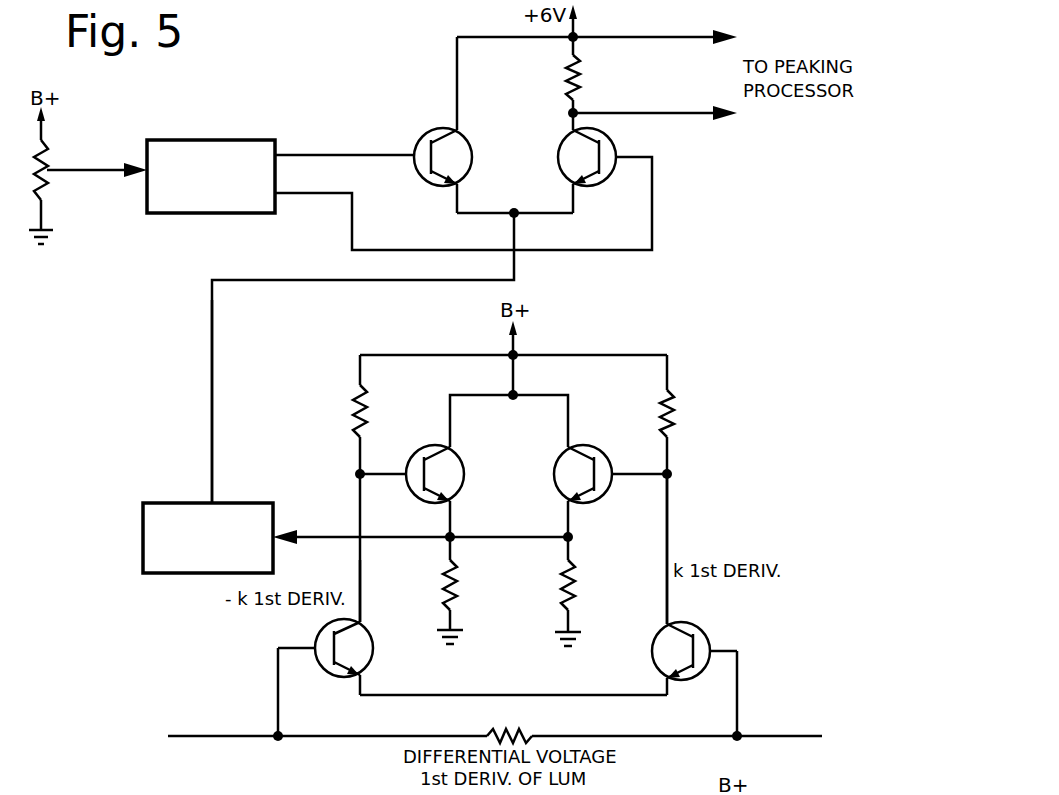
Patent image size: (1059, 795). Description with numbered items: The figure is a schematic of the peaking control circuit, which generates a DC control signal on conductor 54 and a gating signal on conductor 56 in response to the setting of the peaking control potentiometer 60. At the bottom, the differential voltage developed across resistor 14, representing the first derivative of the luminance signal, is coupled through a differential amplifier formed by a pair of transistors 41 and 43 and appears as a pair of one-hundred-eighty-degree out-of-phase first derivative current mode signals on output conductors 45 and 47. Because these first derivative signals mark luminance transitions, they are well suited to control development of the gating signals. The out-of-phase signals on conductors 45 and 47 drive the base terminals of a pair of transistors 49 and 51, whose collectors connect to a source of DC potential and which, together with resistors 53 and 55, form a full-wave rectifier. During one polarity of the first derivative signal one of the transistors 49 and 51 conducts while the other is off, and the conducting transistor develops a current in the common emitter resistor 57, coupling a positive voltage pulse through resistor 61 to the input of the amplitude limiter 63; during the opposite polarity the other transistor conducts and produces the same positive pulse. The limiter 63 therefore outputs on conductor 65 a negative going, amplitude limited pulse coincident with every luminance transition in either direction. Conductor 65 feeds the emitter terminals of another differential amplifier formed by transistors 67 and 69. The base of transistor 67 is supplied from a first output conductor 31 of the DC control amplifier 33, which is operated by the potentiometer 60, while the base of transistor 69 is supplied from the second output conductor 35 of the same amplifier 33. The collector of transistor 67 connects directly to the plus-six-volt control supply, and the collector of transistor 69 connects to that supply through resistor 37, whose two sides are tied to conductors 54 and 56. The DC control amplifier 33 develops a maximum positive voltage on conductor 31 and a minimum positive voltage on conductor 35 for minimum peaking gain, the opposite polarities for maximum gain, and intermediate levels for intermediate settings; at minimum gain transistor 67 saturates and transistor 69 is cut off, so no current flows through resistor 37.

The resistor 14 is at (492, 728).
The first output conductor 31 is at (323, 155).
The DC control amplifier 33 is at (226, 140).
The second output conductor 35 is at (325, 193).
The resistor 37 is at (578, 68).
The transistor 41 is at (373, 655).
The transistor 43 is at (652, 645).
The output conductor 45 is at (361, 598).
The output conductor 47 is at (665, 547).
The transistor 49 is at (462, 460).
The transistor 51 is at (555, 476).
The resistor 53 is at (352, 406).
The conductor 54 is at (669, 37).
The resistor 55 is at (672, 424).
The conductor 56 is at (677, 114).
The common emitter resistor 57 is at (572, 577).
The peaking control potentiometer 60 is at (50, 148).
The resistor 61 is at (445, 581).
The amplitude limiter 63 is at (170, 502).
The conductor 65 is at (210, 400).
The transistor 67 is at (472, 156).
The transistor 69 is at (561, 141).